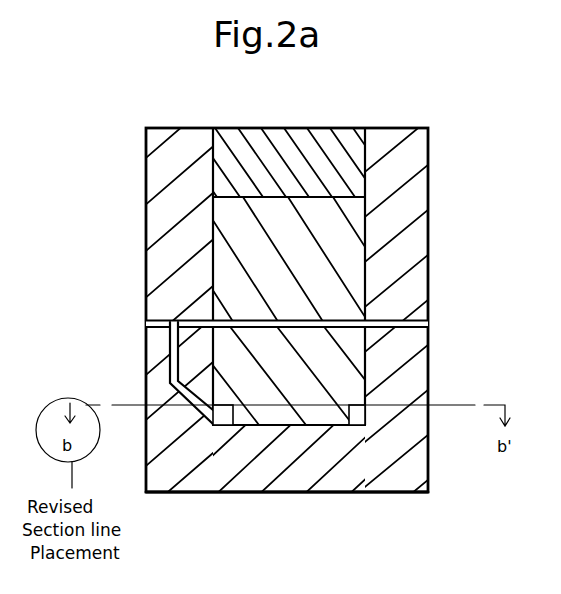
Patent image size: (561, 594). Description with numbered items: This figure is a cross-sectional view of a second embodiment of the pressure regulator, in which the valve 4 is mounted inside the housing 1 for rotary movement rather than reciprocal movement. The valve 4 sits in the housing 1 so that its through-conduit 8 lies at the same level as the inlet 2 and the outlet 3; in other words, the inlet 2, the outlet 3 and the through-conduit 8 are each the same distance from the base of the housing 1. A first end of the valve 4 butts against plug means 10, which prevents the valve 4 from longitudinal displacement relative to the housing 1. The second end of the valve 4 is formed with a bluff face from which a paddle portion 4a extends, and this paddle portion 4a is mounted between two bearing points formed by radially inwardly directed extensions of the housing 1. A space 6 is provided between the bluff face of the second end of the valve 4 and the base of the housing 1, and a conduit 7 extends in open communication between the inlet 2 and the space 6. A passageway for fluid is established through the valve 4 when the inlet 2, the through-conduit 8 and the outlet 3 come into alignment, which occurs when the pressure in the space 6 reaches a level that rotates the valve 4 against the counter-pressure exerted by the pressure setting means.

The housing 1 is at (414, 283).
The inlet 2 is at (148, 323).
The outlet 3 is at (393, 330).
The valve 4 is at (343, 267).
The paddle portion 4a is at (287, 512).
The space 6 is at (358, 412).
The conduit 7 is at (190, 402).
The through-conduit 8 is at (345, 327).
The plug means 10 is at (252, 133).